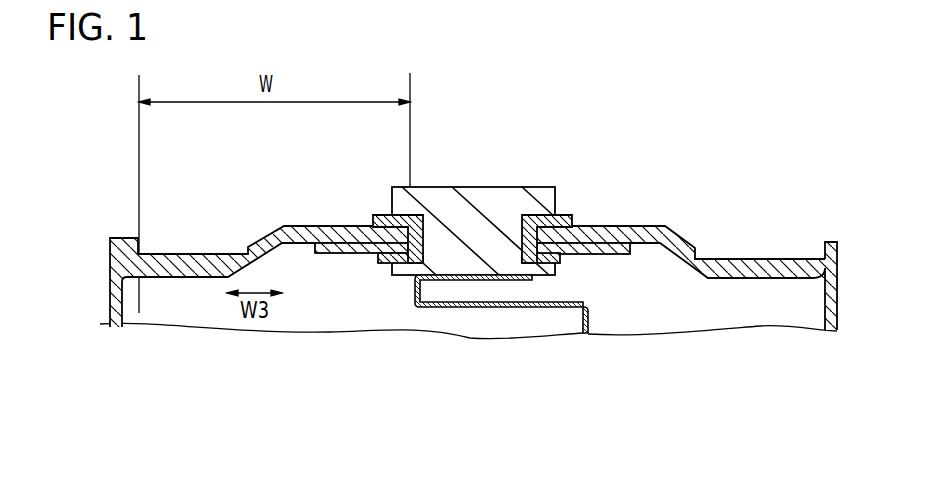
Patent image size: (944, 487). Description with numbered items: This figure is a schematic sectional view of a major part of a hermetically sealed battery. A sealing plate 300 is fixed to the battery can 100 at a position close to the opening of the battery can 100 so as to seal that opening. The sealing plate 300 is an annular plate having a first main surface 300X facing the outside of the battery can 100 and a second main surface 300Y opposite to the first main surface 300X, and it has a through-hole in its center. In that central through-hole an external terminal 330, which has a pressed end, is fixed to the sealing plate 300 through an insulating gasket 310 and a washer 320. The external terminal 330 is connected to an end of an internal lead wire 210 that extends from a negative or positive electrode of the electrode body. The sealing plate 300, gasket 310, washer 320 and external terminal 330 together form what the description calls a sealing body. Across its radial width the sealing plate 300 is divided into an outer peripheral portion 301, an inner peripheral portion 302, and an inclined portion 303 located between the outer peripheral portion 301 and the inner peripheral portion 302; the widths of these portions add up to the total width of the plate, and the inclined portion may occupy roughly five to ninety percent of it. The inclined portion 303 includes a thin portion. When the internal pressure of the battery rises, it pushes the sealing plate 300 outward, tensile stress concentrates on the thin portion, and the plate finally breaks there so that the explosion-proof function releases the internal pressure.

The battery can 100 is at (838, 267).
The internal lead wire 210 is at (415, 287).
The sealing plate 300 is at (463, 242).
The outer peripheral portion 301 is at (227, 277).
The inner peripheral portion 302 is at (282, 298).
The inclined portion 303 is at (273, 210).
The first main surface 300X is at (793, 258).
The second main surface 300Y is at (798, 283).
The insulating gasket 310 is at (390, 215).
The washer 320 is at (387, 264).
The external terminal 330 is at (488, 213).